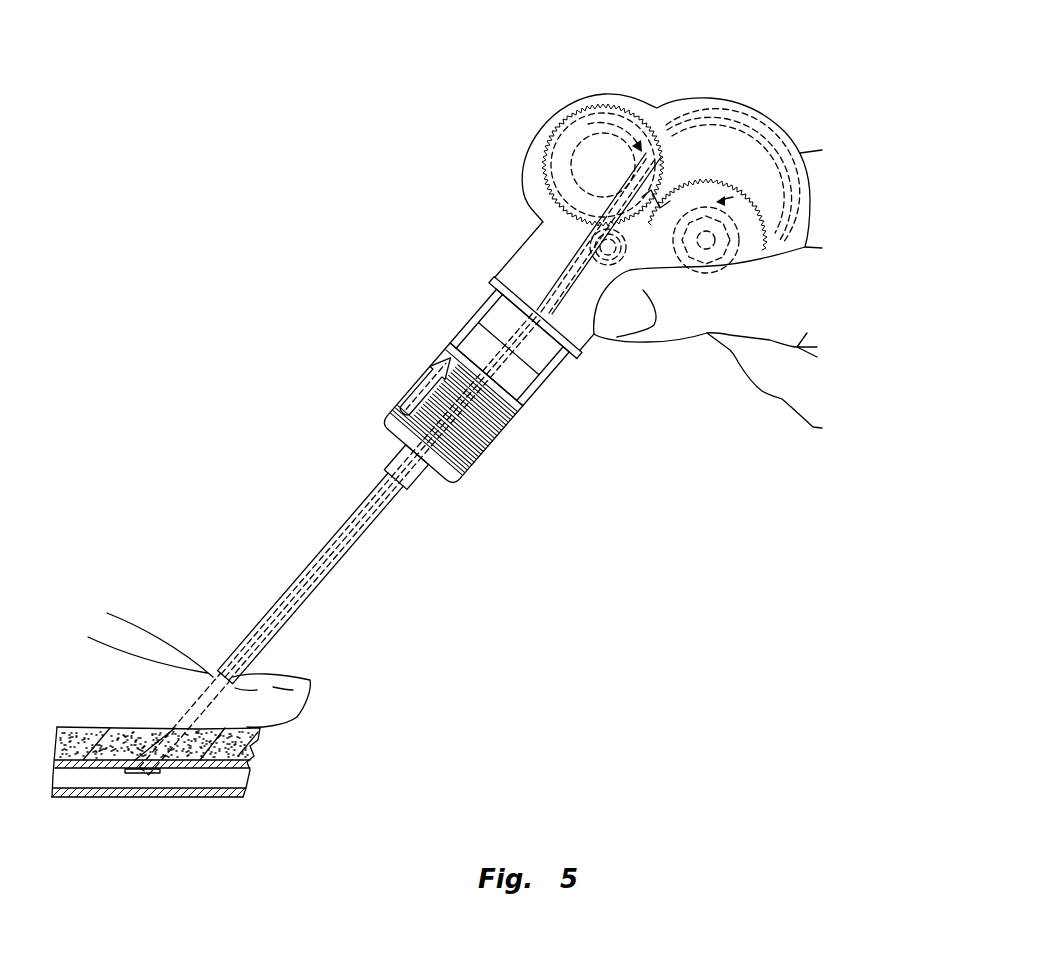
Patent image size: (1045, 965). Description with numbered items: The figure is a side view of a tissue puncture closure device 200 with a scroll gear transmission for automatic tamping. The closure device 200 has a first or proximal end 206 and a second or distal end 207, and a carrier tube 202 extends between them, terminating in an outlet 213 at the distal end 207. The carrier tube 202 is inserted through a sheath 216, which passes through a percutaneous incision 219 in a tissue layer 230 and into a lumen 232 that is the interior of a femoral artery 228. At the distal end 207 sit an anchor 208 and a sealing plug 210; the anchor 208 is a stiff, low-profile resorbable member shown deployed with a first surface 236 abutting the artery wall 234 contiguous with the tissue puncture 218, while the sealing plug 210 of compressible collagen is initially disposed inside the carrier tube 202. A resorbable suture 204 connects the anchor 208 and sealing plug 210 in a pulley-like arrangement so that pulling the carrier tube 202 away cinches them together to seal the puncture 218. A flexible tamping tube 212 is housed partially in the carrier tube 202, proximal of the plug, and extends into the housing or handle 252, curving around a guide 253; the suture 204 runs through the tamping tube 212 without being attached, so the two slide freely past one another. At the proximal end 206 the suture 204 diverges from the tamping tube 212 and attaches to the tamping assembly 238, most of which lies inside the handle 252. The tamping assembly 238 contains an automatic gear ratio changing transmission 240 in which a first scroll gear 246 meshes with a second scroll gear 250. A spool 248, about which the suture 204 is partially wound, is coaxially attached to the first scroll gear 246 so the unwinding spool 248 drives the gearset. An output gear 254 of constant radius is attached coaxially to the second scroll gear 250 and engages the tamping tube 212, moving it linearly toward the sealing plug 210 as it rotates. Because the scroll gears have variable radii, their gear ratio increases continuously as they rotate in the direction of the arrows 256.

The tissue puncture closure device 200 is at (287, 226).
The carrier tube 202 is at (365, 497).
The suture 204 is at (476, 303).
The proximal end 206 is at (567, 387).
The distal end 207 is at (141, 757).
The anchor 208 is at (130, 774).
The sealing plug 210 is at (147, 737).
The tamping tube 212 is at (553, 280).
The outlet 213 is at (232, 727).
The sheath 216 is at (387, 507).
The tissue puncture 218 is at (172, 778).
The percutaneous incision 219 is at (143, 738).
The femoral artery 228 is at (243, 788).
The tissue layer 230 is at (260, 742).
The lumen 232 is at (234, 785).
The artery wall 234 is at (188, 777).
The first surface 236 is at (118, 773).
The tamping assembly 238 is at (563, 222).
The automatic gear ratio changing transmission 240 is at (660, 127).
The first scroll gear 246 is at (700, 193).
The spool 248 is at (740, 193).
The second scroll gear 250 is at (558, 122).
The handle 252 is at (598, 94).
The guide 253 is at (688, 127).
The output gear 254 is at (568, 152).
The arrows 256 is at (600, 117).